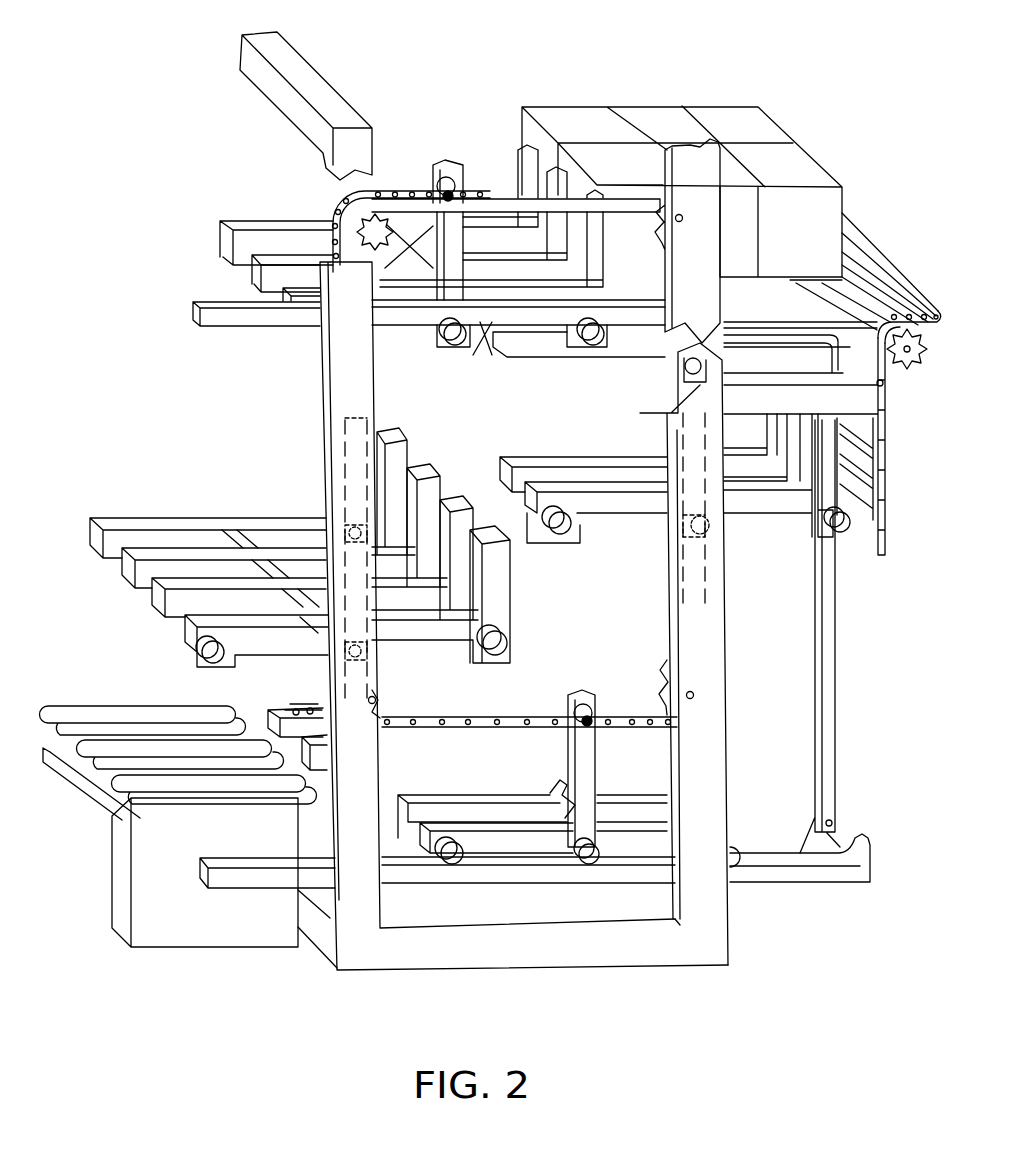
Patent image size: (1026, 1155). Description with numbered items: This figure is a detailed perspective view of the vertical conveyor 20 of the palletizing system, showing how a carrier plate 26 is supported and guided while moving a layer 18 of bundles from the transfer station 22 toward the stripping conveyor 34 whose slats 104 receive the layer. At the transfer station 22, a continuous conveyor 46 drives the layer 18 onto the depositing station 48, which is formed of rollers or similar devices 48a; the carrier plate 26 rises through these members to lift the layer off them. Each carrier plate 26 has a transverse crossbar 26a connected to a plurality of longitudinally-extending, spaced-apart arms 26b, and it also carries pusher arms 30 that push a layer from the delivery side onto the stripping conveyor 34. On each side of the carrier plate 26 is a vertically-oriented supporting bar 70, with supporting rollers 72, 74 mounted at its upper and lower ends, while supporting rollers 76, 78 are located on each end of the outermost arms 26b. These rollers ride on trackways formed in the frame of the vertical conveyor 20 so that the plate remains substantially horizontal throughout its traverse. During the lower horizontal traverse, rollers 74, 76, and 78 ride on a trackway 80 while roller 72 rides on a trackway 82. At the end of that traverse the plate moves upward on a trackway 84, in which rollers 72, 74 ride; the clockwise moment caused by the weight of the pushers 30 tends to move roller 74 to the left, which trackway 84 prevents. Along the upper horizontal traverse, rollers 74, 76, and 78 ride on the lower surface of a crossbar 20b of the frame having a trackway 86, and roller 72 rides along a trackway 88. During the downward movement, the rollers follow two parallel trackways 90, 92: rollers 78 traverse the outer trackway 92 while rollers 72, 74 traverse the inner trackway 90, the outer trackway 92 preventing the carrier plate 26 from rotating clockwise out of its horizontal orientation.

The layer of bundles 18 is at (657, 106).
The vertical conveyor 20 is at (311, 378).
The crossbar 20b is at (488, 330).
The transfer station 22 is at (146, 694).
The carrier plate 26 is at (236, 224).
The transverse crossbar 26a is at (248, 530).
The arms 26b is at (586, 456).
The pusher arms 30 is at (598, 257).
The stripping conveyor 34 is at (887, 432).
The continuous conveyor 46 is at (185, 840).
The depositing station 48 is at (259, 706).
The rollers 48a is at (311, 711).
The supporting bars 70 is at (457, 240).
The supporting roller 72 is at (450, 180).
The supporting roller 74 is at (357, 667).
The supporting roller 76 is at (565, 535).
The supporting roller 78 is at (600, 336).
The trackway 80 is at (795, 876).
The trackway 82 is at (484, 718).
The trackway 84 is at (366, 428).
The trackway 86 is at (400, 338).
The trackway 88 is at (499, 203).
The inner trackway 90 is at (720, 606).
The outer trackway 92 is at (836, 636).
The slats 104 is at (858, 247).